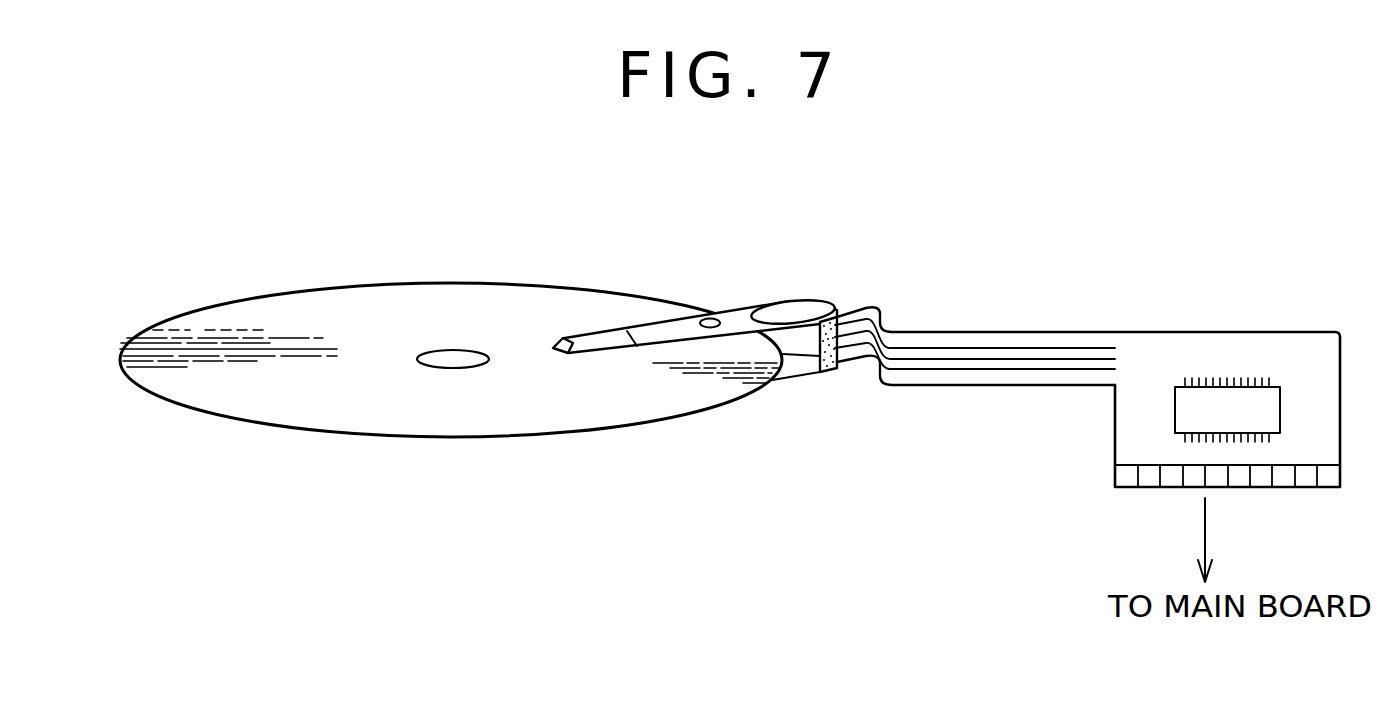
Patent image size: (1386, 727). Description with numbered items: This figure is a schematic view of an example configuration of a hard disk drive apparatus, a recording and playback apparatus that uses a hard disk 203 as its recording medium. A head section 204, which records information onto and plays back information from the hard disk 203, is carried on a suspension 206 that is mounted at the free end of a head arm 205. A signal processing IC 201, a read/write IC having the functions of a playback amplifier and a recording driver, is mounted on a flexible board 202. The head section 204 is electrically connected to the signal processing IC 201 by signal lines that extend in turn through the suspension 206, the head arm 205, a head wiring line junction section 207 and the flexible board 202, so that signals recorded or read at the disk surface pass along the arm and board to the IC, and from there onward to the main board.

The signal processing IC 201 is at (1232, 400).
The flexible board 202 is at (963, 390).
The hard disk 203 is at (282, 405).
The head section 204 is at (561, 338).
The head arm 205 is at (737, 325).
The suspension 206 is at (615, 340).
The head wiring line junction section 207 is at (830, 318).